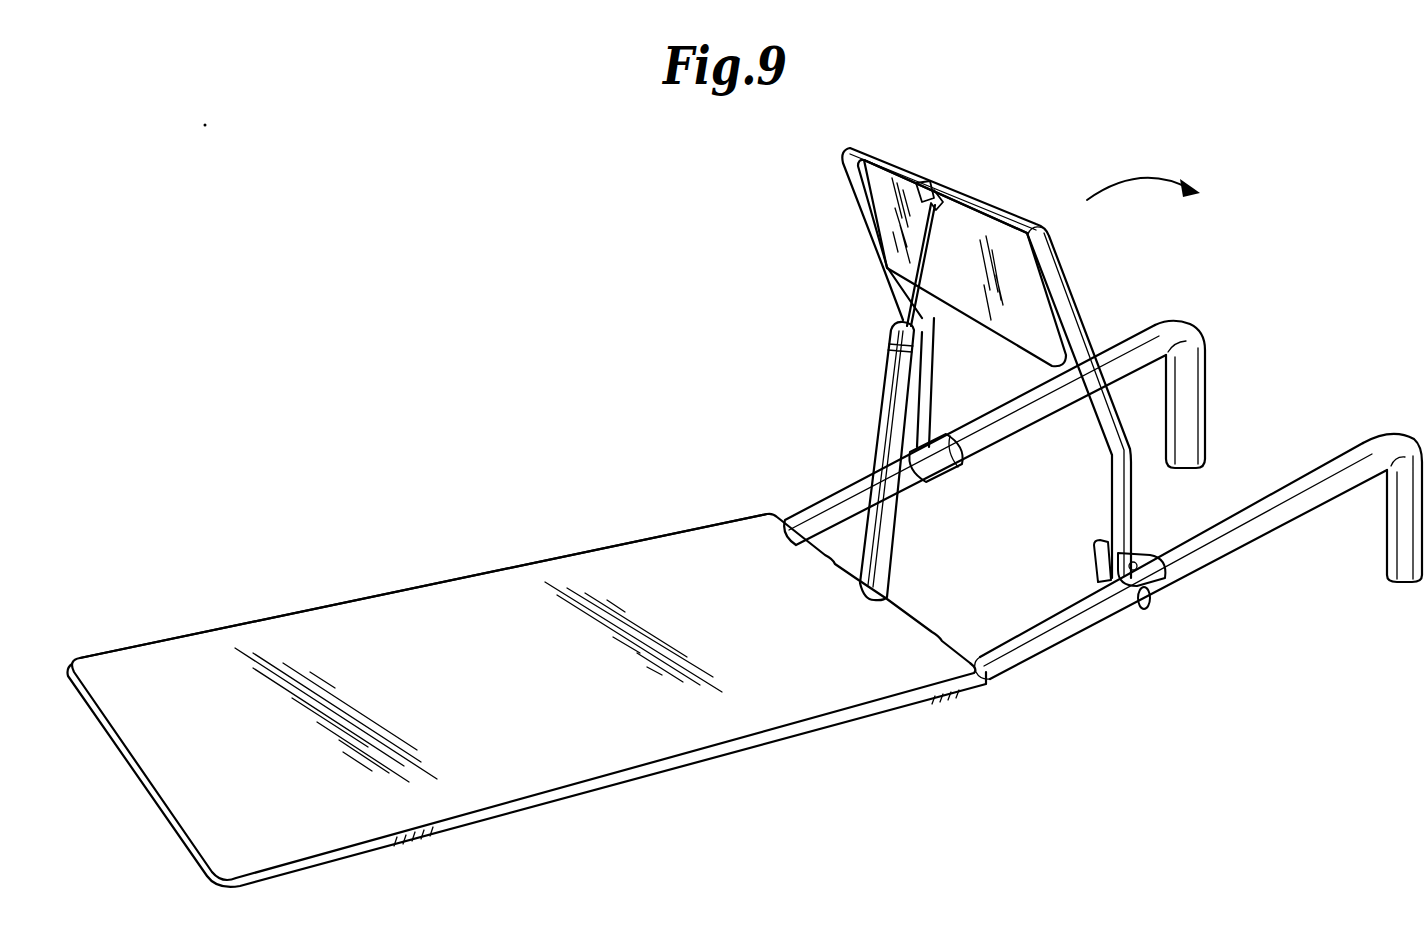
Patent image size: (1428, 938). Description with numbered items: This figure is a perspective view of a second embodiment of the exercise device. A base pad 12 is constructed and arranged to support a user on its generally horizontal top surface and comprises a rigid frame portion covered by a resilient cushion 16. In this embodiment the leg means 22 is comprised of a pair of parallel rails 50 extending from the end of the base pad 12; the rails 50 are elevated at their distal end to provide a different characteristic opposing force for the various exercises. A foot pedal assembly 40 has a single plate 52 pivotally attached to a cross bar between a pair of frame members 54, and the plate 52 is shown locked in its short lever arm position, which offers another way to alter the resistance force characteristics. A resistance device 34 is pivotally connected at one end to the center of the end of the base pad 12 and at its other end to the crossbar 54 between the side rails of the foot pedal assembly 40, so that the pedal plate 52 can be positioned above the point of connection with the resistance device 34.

The base pad 12 is at (401, 566).
The resilient cushion 16 is at (287, 606).
The leg means 22 is at (1240, 541).
The resistance device 34 is at (917, 541).
The foot pedal assembly 40 is at (1083, 293).
The parallel rails 50 is at (1363, 442).
The plate 52 is at (973, 200).
The frame members 54 is at (1117, 337).